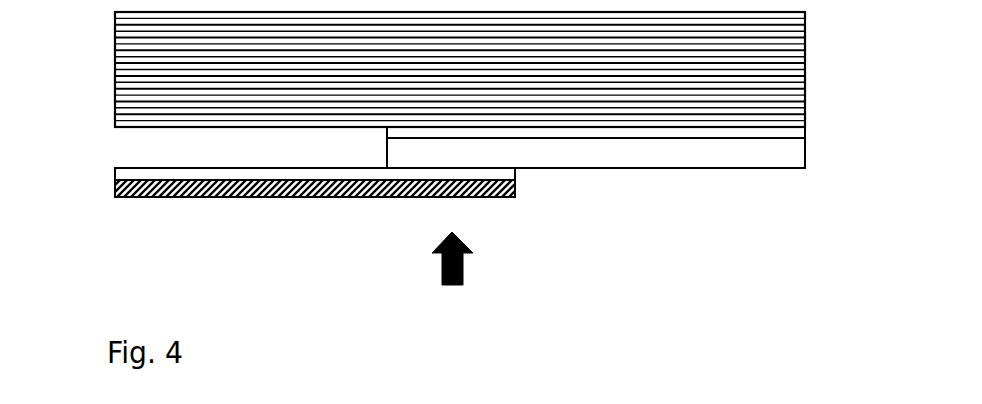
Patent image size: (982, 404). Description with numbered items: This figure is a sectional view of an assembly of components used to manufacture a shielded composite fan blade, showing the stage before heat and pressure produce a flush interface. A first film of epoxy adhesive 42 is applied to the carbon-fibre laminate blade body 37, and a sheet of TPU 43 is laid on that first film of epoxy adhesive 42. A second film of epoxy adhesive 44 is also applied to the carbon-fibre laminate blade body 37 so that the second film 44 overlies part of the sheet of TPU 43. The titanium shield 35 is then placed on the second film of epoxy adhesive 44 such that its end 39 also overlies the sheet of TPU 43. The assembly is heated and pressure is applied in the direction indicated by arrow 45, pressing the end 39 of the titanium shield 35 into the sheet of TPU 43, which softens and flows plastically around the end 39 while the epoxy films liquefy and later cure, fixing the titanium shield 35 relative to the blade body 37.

The carbon-fibre laminate blade body 37 is at (805, 79).
The first film of epoxy adhesive 42 is at (805, 131).
The sheet of TPU 43 is at (760, 168).
The second film of epoxy adhesive 44 is at (115, 168).
The titanium shield 35 is at (115, 185).
The end of the titanium shield 39 is at (512, 212).
The arrow 45 is at (442, 265).